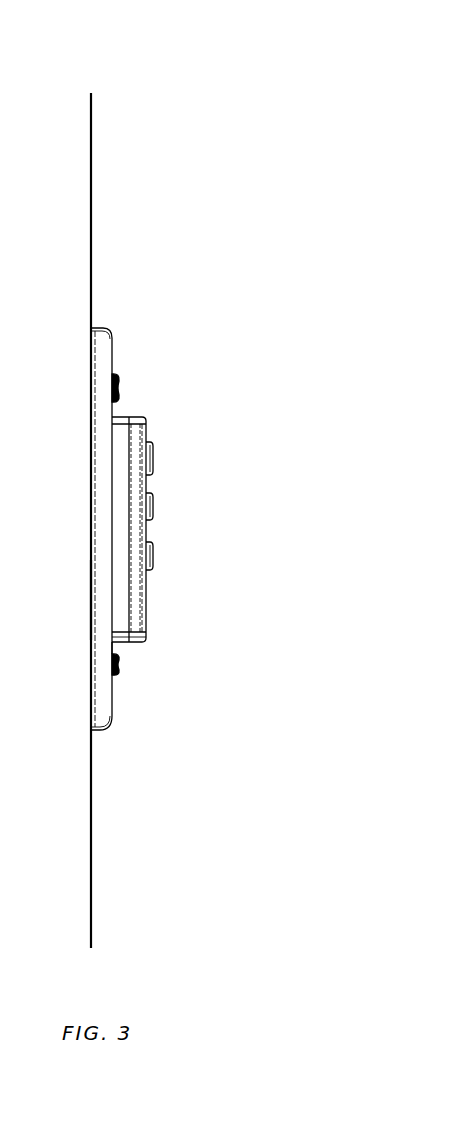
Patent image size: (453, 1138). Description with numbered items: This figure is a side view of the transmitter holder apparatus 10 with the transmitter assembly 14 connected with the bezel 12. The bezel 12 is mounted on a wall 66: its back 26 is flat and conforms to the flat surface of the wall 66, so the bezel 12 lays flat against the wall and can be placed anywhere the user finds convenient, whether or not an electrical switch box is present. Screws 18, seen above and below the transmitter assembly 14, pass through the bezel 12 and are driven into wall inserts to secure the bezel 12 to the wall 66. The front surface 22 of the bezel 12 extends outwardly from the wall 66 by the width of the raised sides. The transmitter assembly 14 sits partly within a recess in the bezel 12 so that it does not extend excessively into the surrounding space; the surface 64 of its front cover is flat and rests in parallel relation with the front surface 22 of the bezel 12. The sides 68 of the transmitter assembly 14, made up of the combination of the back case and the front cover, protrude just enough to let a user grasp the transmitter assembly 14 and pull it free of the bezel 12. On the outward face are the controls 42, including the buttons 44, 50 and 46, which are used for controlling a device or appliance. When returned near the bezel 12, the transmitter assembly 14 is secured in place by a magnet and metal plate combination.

The transmitter holder apparatus 10 is at (213, 277).
The bezel 12 is at (105, 345).
The transmitter assembly 14 is at (163, 420).
The screws 18 is at (118, 385).
The front surface 22 is at (120, 650).
The back 26 is at (90, 575).
The controls 42 is at (245, 463).
The button 44 is at (152, 460).
The button 46 is at (152, 555).
The button 50 is at (152, 505).
The surface of front cover 64 is at (158, 615).
The wall 66 is at (92, 238).
The sides of transmitter assembly 68 is at (138, 428).